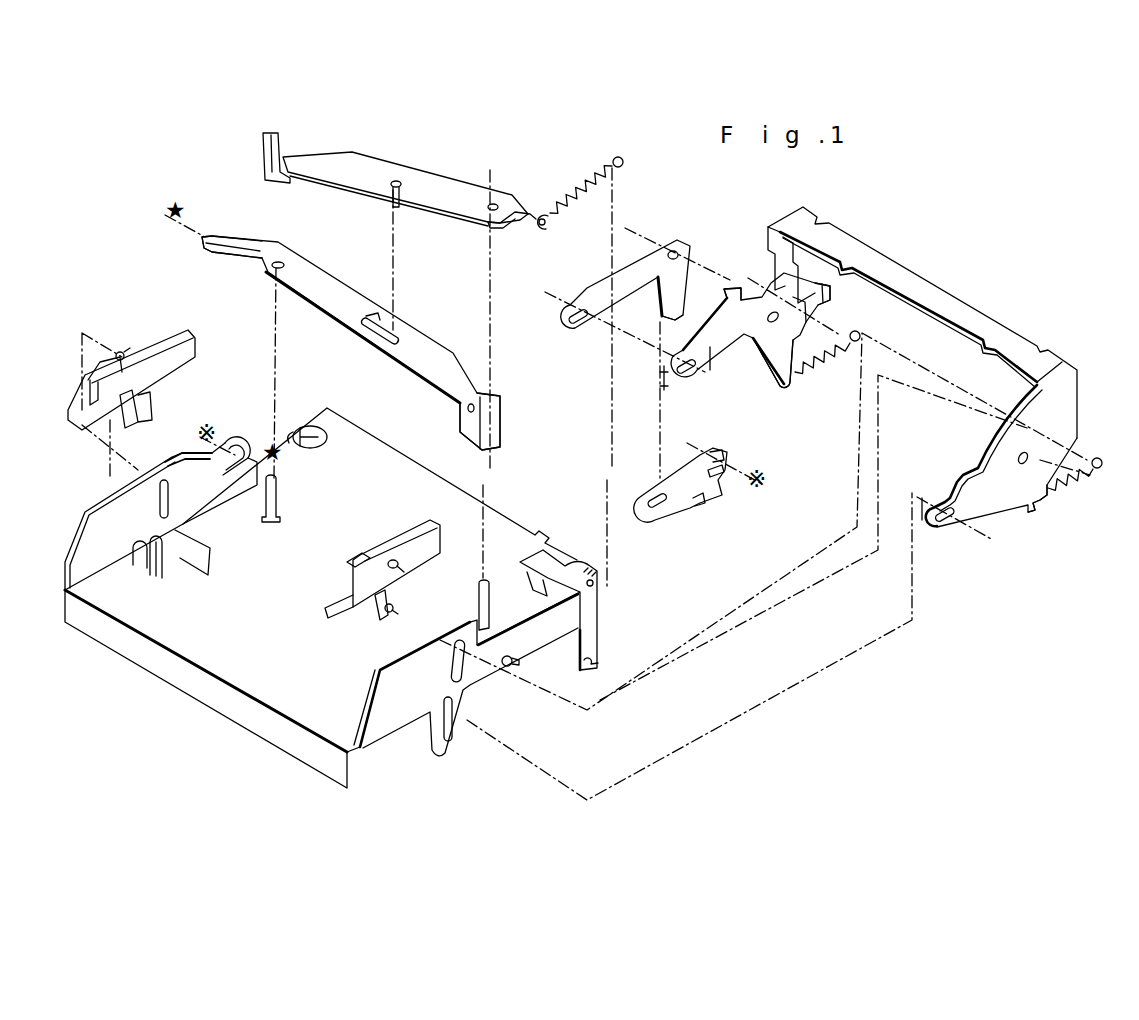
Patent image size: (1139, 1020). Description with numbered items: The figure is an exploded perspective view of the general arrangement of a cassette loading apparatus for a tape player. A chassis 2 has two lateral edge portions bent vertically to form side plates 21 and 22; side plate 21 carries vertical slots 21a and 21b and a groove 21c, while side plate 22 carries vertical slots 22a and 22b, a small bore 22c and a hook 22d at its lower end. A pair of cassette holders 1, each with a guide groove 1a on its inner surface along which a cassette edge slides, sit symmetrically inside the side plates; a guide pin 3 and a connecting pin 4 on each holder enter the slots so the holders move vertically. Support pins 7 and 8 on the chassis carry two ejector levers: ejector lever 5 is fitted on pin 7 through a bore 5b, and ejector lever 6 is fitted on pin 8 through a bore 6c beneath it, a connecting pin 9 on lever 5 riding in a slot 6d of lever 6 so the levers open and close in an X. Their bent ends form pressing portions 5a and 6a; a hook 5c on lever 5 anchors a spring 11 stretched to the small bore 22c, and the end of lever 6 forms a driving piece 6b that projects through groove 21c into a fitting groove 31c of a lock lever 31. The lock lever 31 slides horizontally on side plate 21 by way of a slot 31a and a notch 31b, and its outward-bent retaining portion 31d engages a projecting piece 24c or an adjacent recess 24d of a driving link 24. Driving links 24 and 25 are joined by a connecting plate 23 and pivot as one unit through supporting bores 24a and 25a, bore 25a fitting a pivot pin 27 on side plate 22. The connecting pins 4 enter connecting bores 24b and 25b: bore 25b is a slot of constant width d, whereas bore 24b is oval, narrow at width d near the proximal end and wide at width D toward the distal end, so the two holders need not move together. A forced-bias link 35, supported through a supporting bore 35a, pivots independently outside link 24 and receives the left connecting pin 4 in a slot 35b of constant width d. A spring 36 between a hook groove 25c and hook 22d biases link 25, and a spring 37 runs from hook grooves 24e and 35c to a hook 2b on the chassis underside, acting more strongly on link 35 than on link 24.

The cassette holder 1 is at (160, 340).
The guide groove 1a is at (198, 342).
The chassis 2 is at (178, 678).
The hook 2b is at (330, 430).
The guide pin 3 is at (123, 350).
The connecting pin 4 is at (128, 418).
The ejector lever 5 is at (428, 185).
The pressing portion 5a is at (265, 142).
The bore 5b is at (507, 228).
The hook 5c is at (550, 230).
The ejector lever 6 is at (325, 275).
The pressing portion 6a is at (500, 425).
The driving piece 6b is at (212, 247).
The bore 6c is at (270, 268).
The slot 6d is at (362, 332).
The support pin 7 is at (492, 605).
The support pin 8 is at (278, 492).
The connecting pin 9 is at (399, 205).
The spring 11 is at (572, 190).
The side plate 21 is at (75, 530).
The slot 21a is at (182, 455).
The slot 21b is at (150, 580).
The groove 21c is at (237, 440).
The side plate 22 is at (400, 720).
The slot 22a is at (478, 687).
The slot 22b is at (448, 740).
The small bore 22c is at (598, 584).
The hook 22d is at (600, 660).
The connecting plate 23 is at (982, 318).
The driving link 24 is at (738, 350).
The supporting bore 24a is at (736, 285).
The connecting bore 24b is at (697, 375).
The projecting piece 24c is at (830, 300).
The recess 24d is at (818, 315).
The hook groove 24e is at (781, 390).
The driving link 25 is at (1000, 520).
The supporting bore 25a is at (985, 470).
The connecting bore 25b is at (948, 525).
The hook groove 25c is at (1040, 512).
The pivot pin 27 is at (518, 661).
The lock lever 31 is at (690, 510).
The slot 31a is at (652, 515).
The notch 31b is at (730, 470).
The fitting groove 31c is at (725, 452).
The retaining portion 31d is at (705, 505).
The forced-bias link 35 is at (625, 255).
The supporting bore 35a is at (678, 250).
The slot 35b is at (578, 325).
The hook groove 35c is at (668, 316).
The spring 36 is at (1075, 490).
The spring 37 is at (822, 370).
The width D is at (674, 385).
The width d is at (823, 450).